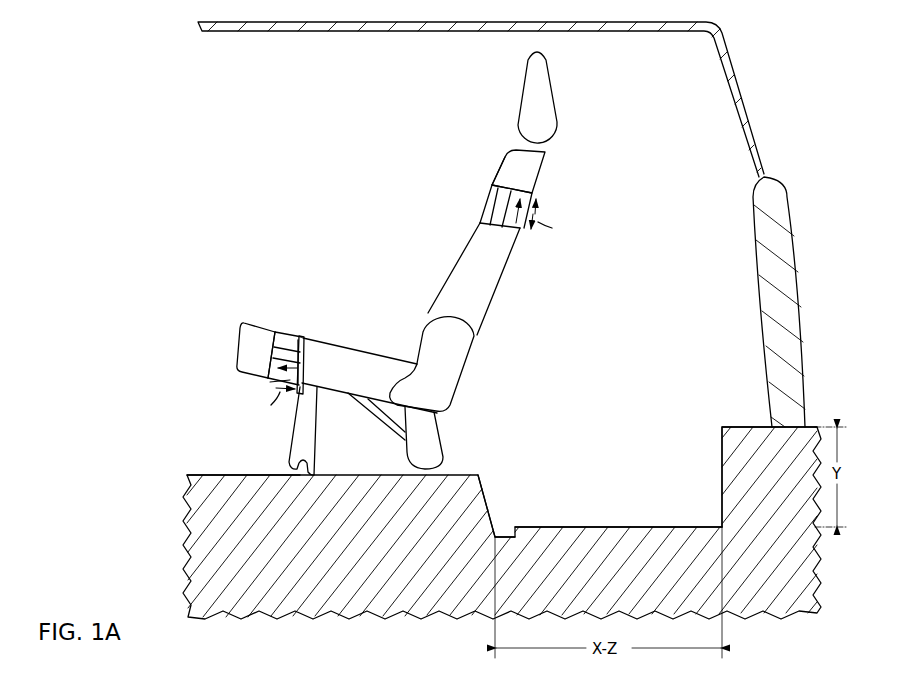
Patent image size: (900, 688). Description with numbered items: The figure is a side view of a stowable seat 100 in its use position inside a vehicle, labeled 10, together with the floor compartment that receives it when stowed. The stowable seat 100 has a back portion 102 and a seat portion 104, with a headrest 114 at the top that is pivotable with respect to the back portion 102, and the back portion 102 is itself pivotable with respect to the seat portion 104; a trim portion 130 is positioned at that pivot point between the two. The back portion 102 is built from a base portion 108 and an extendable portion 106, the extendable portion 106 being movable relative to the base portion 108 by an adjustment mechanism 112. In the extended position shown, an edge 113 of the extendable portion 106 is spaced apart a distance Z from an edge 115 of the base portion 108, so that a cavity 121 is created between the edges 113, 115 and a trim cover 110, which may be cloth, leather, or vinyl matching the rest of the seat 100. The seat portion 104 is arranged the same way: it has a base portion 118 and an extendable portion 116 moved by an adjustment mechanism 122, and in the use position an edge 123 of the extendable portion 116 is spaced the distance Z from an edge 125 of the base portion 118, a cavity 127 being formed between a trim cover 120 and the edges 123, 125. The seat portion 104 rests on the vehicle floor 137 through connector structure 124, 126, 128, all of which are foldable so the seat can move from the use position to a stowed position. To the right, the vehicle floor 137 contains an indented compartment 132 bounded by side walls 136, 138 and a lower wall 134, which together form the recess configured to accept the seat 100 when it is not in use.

The vehicle/support structure 10 is at (790, 157).
The stowable seat 100 is at (358, 152).
The back portion 102 is at (458, 158).
The seat portion 104 is at (340, 326).
The extendable portion 106 is at (540, 168).
The base portion 108 is at (488, 310).
The trim cover 110 is at (480, 188).
The adjustment mechanism 112 is at (512, 236).
The edge 113 is at (500, 177).
The headrest 114 is at (547, 95).
The edge 115 is at (478, 215).
The extendable portion 116 is at (240, 360).
The base portion 118 is at (363, 352).
The trim cover 120 is at (304, 336).
The cavity 121 is at (545, 200).
The adjustment mechanism 122 is at (288, 347).
The edge 123 is at (270, 335).
The connector structure 124 is at (308, 465).
The edge 125 is at (305, 355).
The connector structure 126 is at (385, 429).
The cavity 127 is at (283, 380).
The connector structure 128 is at (437, 442).
The trim portion 130 is at (468, 364).
The indented compartment 132 is at (613, 488).
The lower wall 134 is at (650, 526).
The side wall 136 is at (722, 430).
The vehicle floor 137 is at (203, 474).
The side wall 138 is at (490, 505).